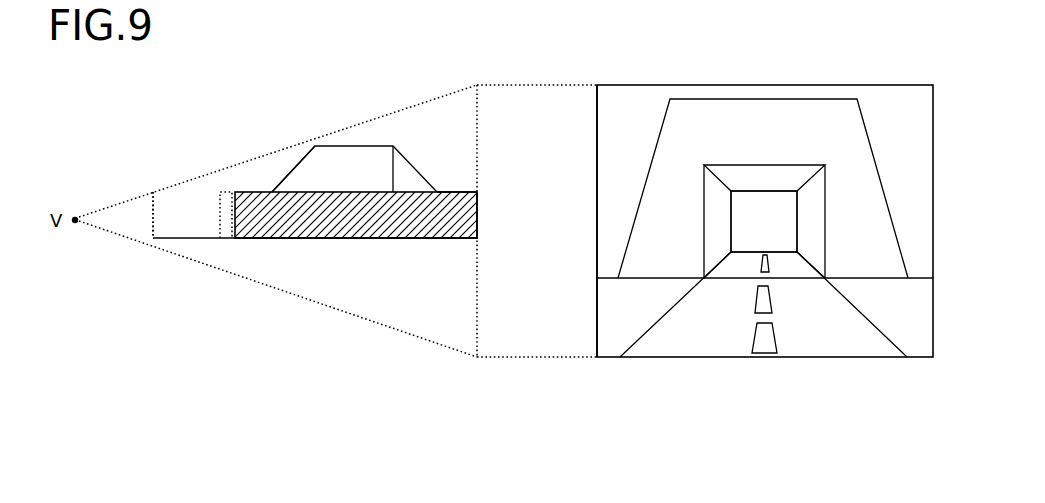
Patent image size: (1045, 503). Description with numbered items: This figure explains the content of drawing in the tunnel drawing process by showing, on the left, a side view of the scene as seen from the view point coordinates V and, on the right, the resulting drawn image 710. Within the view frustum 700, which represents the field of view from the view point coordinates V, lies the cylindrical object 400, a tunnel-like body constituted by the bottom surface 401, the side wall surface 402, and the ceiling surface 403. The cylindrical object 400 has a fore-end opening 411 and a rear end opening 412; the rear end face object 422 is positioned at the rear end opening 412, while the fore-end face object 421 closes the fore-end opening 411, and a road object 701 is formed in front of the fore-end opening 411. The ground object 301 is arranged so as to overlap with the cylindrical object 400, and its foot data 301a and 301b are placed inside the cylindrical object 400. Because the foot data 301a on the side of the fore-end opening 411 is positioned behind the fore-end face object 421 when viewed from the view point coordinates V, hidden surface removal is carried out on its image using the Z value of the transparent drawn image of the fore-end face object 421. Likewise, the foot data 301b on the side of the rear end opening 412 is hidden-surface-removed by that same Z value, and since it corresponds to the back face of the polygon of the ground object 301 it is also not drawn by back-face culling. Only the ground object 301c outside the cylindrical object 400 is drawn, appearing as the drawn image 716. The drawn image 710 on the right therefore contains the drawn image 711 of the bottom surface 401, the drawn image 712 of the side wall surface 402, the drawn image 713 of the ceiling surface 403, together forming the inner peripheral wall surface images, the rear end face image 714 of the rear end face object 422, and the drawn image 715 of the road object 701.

The ground object 301 is at (365, 136).
The foot data 301a is at (245, 239).
The foot data 301b is at (443, 240).
The ground object 301c is at (299, 157).
The bottom surface 401 is at (290, 238).
The side wall surface 402 is at (333, 215).
The ceiling surface 403 is at (393, 146).
The fore-end opening 411 is at (209, 208).
The rear end opening 412 is at (479, 212).
The fore-end face object 421 is at (228, 192).
The rear end face object 422 is at (478, 236).
The cylindrical object 400 is at (470, 179).
The view frustum 700 is at (482, 128).
The road object 701 is at (181, 238).
The drawn image 710 is at (770, 85).
The drawn image of the bottom surface 711 is at (794, 262).
The drawn image of the side wall surface 712 is at (718, 214).
The drawn image of the ceiling surface 713 is at (755, 170).
The rear end face image 714 is at (778, 207).
The drawn image of the road object 715 is at (815, 345).
The drawn image 716 is at (686, 120).